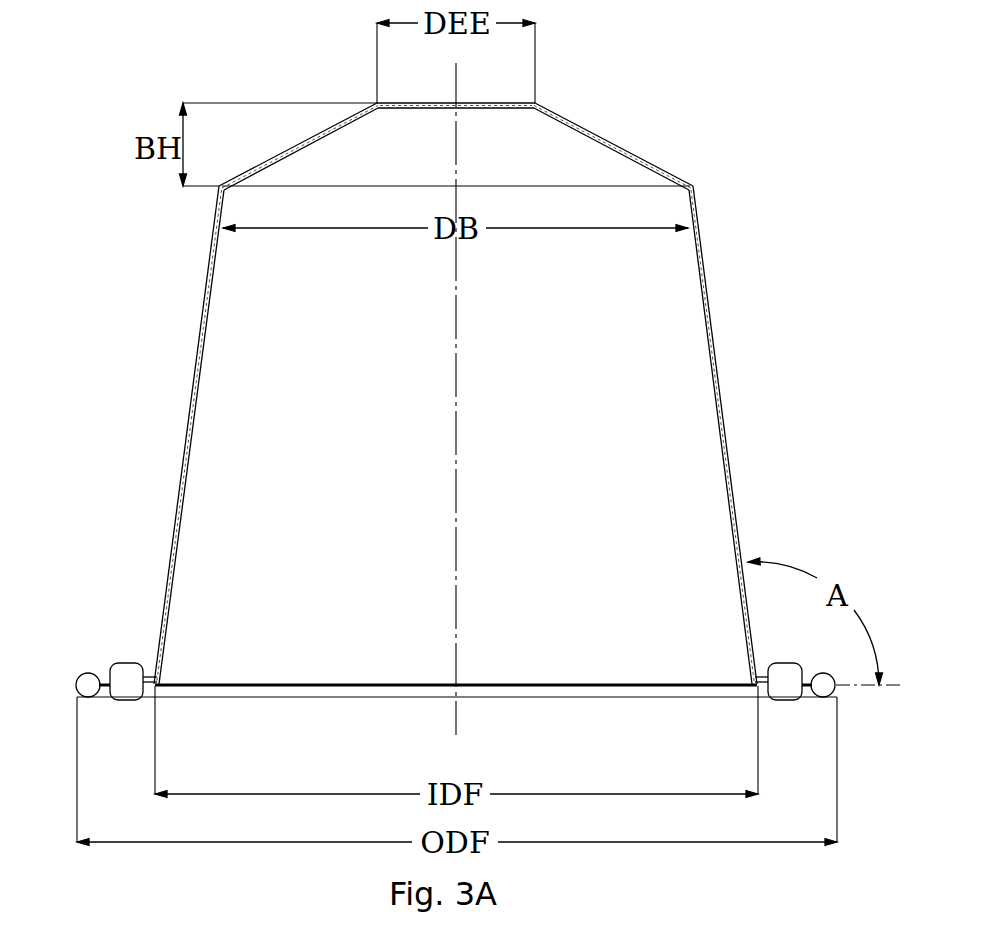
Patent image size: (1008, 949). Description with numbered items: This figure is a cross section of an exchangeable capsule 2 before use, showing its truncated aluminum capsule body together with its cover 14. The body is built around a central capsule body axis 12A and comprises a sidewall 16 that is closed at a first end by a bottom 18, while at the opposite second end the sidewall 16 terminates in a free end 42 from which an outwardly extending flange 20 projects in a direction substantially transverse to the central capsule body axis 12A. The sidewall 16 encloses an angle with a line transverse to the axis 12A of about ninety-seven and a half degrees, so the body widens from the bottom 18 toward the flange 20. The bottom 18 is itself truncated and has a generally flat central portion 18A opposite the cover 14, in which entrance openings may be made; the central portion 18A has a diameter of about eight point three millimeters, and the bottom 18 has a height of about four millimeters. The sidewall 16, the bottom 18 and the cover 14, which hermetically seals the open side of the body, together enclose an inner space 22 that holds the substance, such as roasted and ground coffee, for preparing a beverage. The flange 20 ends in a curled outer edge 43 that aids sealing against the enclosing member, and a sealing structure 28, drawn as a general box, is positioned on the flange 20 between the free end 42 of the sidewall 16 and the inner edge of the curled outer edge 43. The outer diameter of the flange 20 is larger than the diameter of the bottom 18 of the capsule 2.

The exchangeable capsule 2 is at (723, 441).
The central capsule body axis 12A is at (455, 632).
The cover 14 is at (303, 686).
The sidewall 16 is at (187, 441).
The bottom 18 is at (607, 144).
The central portion 18A is at (490, 104).
The outwardly extending flange 20 is at (103, 677).
The inner space 22 is at (332, 489).
The sealing structure 28 is at (125, 672).
The free end 42 is at (163, 679).
The curled outer edge 43 is at (76, 684).